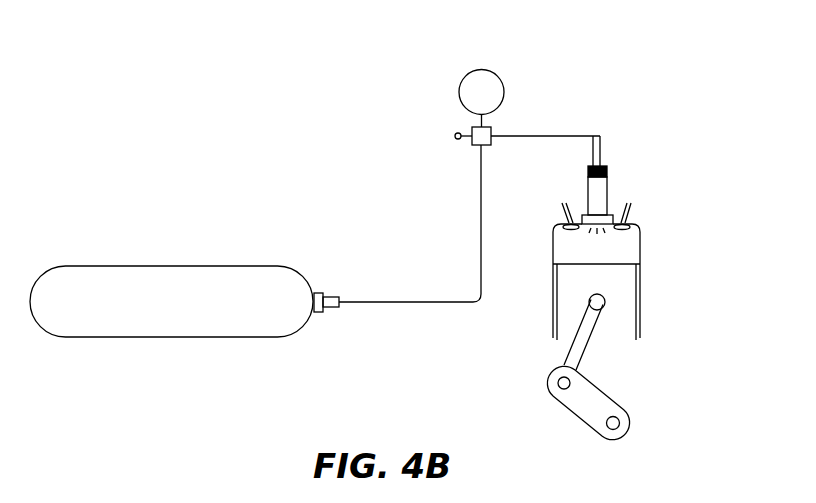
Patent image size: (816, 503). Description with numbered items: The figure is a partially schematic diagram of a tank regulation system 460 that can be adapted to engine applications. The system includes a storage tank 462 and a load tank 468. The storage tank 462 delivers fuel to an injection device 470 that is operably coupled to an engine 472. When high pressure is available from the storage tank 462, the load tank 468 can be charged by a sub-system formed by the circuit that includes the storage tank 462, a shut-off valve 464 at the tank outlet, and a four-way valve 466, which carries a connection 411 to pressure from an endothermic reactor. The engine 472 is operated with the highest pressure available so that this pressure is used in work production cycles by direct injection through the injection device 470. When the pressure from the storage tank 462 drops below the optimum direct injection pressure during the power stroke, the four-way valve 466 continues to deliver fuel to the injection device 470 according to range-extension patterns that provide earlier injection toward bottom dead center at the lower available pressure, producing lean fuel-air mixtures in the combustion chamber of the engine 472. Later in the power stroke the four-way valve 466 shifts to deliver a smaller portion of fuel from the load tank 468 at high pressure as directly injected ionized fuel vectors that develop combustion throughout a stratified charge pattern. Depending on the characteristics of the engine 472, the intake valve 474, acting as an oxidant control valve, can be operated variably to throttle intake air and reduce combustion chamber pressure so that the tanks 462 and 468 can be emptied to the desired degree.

The tank regulation system 460 is at (690, 82).
The storage tank 462 is at (183, 265).
The shut-off valve 464 is at (328, 296).
The four-way valve 466 is at (472, 146).
The load tank 468 is at (459, 92).
The connection 411 is at (455, 135).
The injection device 470 is at (607, 188).
The engine 472 is at (641, 245).
The intake valve 474 is at (567, 226).